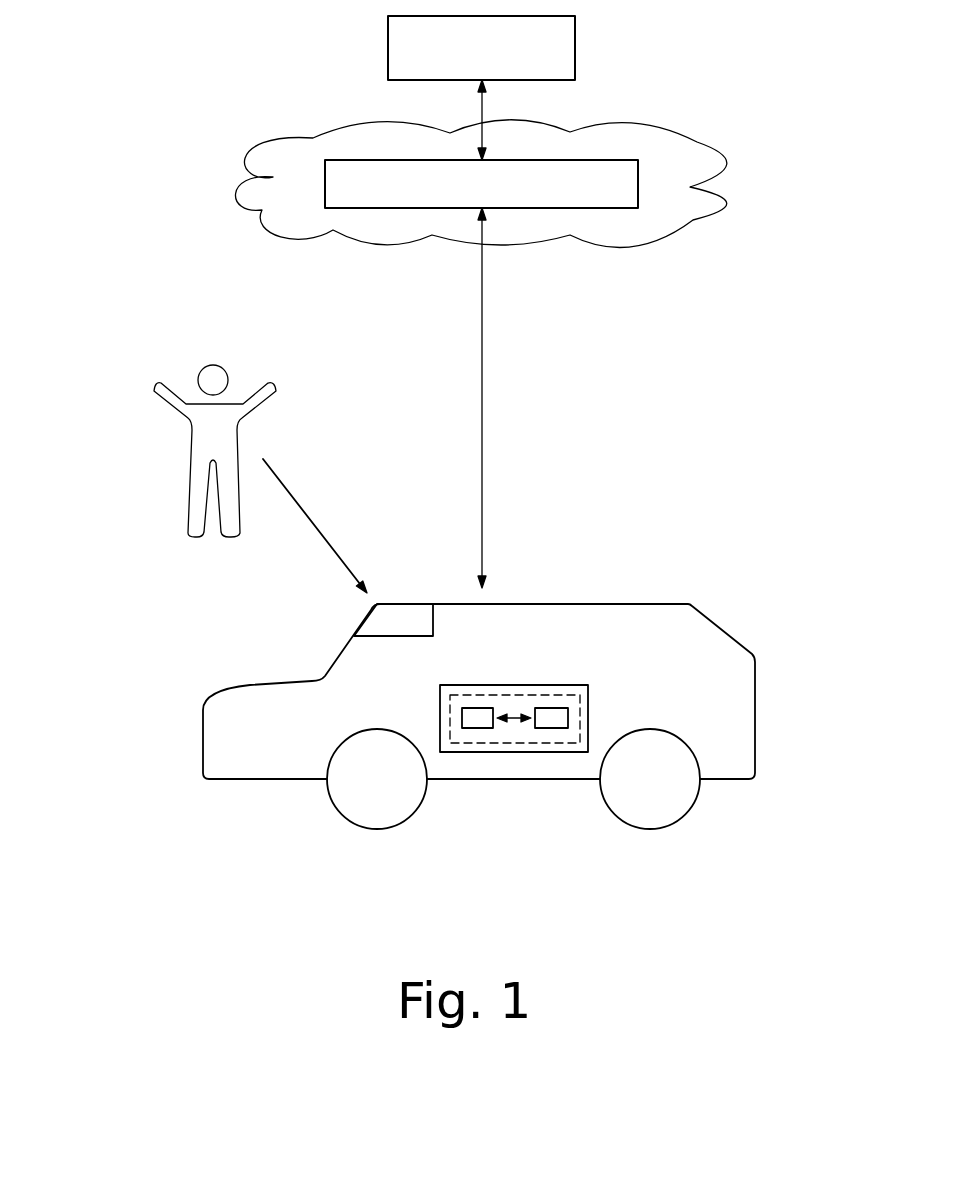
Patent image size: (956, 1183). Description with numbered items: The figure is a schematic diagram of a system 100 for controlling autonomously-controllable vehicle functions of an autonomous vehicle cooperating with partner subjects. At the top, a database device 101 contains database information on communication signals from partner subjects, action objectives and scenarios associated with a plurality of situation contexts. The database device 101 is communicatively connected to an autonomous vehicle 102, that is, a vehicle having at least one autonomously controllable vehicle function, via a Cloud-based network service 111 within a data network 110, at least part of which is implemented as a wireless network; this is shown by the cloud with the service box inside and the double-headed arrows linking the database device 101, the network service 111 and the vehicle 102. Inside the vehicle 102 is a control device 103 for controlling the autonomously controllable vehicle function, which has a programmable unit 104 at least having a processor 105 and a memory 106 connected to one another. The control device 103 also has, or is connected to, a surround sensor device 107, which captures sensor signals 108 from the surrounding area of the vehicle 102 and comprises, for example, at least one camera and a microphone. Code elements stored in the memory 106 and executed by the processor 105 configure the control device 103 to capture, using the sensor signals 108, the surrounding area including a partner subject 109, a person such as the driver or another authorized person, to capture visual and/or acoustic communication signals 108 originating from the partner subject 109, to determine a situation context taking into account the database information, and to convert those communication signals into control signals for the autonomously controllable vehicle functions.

The system 100 is at (222, 45).
The database device 101 is at (505, 58).
The autonomous vehicle 102 is at (720, 630).
The control device 103 is at (453, 752).
The programmable unit 104 is at (503, 743).
The processor 105 is at (478, 715).
The memory 106 is at (558, 720).
The surround sensor device 107 is at (375, 620).
The sensor signals 108 is at (308, 510).
The partner subject 109 is at (155, 383).
The data network 110 is at (697, 143).
The Cloud-based network service 111 is at (505, 199).